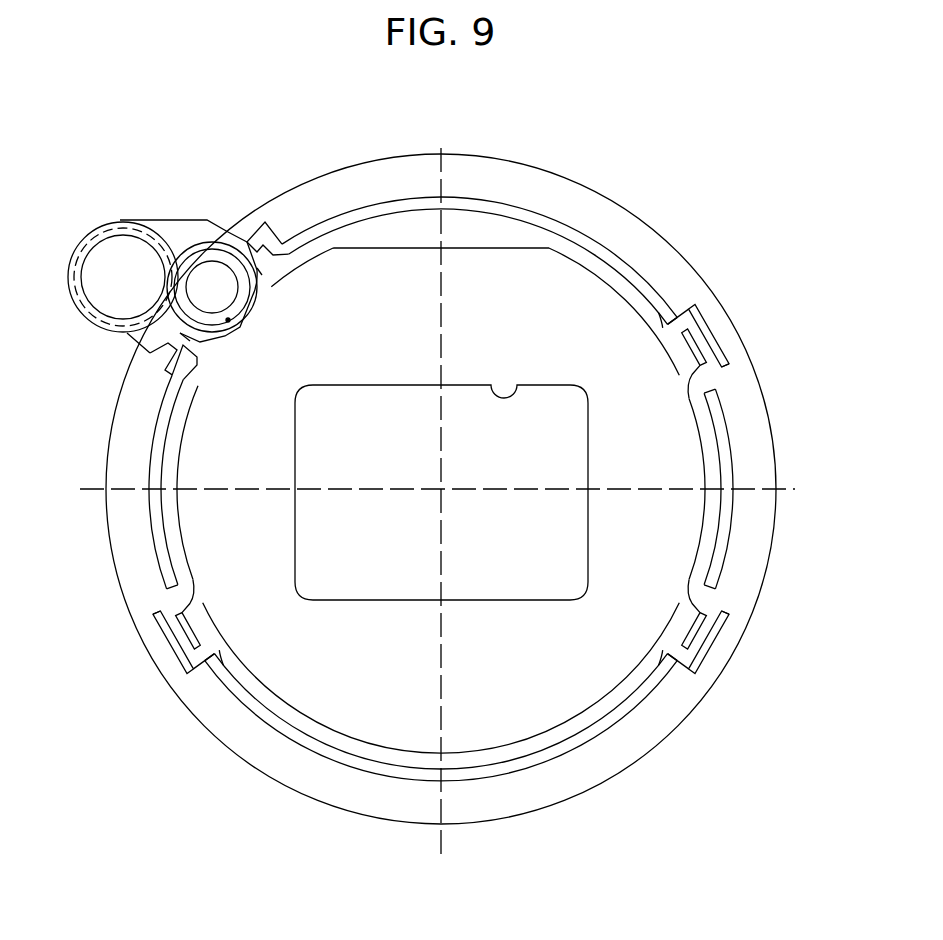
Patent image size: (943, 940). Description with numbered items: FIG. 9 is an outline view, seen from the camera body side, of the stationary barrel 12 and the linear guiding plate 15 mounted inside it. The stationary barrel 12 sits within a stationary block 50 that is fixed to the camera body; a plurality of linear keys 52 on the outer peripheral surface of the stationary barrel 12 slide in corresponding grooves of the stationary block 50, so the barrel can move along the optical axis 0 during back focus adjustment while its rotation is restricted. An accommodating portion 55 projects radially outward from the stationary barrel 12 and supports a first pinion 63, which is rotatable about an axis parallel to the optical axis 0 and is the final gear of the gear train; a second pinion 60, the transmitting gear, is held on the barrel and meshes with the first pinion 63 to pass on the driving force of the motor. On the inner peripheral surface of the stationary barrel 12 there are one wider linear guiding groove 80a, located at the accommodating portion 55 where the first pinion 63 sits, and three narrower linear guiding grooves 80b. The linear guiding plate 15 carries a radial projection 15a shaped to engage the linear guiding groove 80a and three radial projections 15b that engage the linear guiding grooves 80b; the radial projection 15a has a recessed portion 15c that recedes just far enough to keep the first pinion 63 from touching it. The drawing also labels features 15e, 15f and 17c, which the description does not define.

The optical axis 0 is at (445, 493).
The stationary barrel 12 is at (585, 240).
The linear guiding plate 15 is at (270, 670).
The radial projection 15a is at (270, 238).
The radial projections 15b is at (722, 360).
The recessed portion 15c is at (230, 321).
The engagement portion 15e is at (260, 273).
The engagement portion 15f is at (190, 340).
The rectangular aperture 17c is at (517, 382).
The stationary block 50 is at (515, 175).
The linear keys 52 is at (725, 372).
The accommodating portion 55 is at (187, 228).
The second pinion 60 is at (93, 233).
The first pinion 63 is at (232, 237).
The linear guiding groove 80a is at (187, 373).
The linear guiding grooves 80b is at (688, 322).